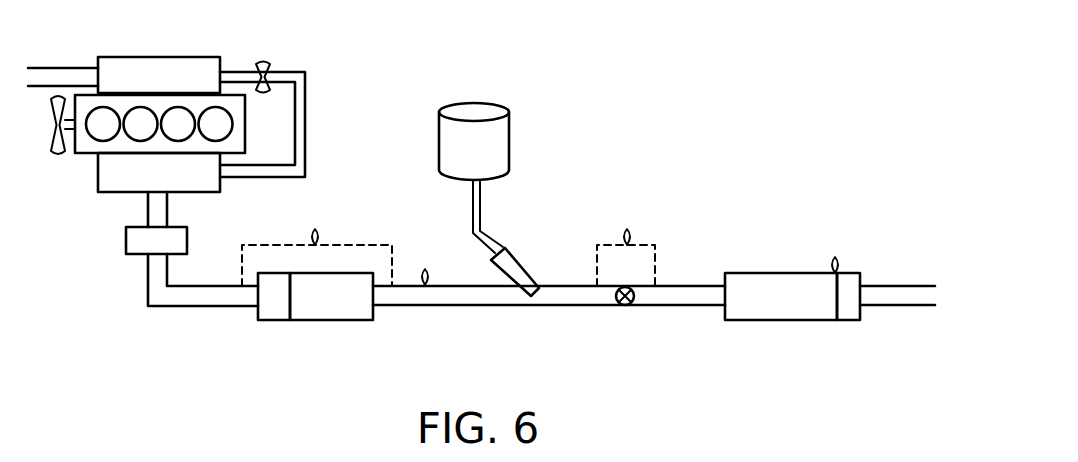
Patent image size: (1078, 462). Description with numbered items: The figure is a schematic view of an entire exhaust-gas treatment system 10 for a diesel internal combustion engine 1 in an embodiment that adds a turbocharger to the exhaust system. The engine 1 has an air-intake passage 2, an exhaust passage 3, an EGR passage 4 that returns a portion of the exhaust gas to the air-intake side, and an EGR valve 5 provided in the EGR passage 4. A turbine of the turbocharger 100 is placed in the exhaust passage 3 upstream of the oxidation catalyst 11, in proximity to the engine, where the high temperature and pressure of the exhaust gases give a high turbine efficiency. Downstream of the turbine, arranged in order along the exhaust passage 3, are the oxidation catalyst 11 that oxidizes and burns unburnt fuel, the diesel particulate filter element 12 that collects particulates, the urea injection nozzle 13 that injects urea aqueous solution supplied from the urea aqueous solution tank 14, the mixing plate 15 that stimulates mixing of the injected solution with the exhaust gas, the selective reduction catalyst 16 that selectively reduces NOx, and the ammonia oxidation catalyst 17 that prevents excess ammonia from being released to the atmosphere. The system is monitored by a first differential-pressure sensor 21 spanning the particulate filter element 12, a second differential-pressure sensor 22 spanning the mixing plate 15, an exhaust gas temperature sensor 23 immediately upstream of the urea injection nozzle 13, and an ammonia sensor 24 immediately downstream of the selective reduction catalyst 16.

The internal combustion engine 1 is at (247, 122).
The air-intake passage 2 is at (70, 63).
The exhaust passage 3 is at (165, 308).
The EGR passage 4 is at (305, 125).
The EGR valve 5 is at (264, 60).
The exhaust-gas treatment system 10 is at (737, 196).
The oxidation catalyst 11 is at (275, 322).
The diesel particulate filter element 12 is at (332, 322).
The urea injection nozzle 13 is at (520, 257).
The urea aqueous solution tank 14 is at (510, 145).
The mixing plate 15 is at (628, 307).
The selective reduction catalyst 16 is at (780, 322).
The ammonia oxidation catalyst 17 is at (847, 322).
The first differential-pressure sensor 21 is at (320, 226).
The second differential-pressure sensor 22 is at (629, 226).
The exhaust gas temperature sensor 23 is at (428, 266).
The ammonia sensor 24 is at (838, 254).
The turbocharger 100 is at (127, 255).